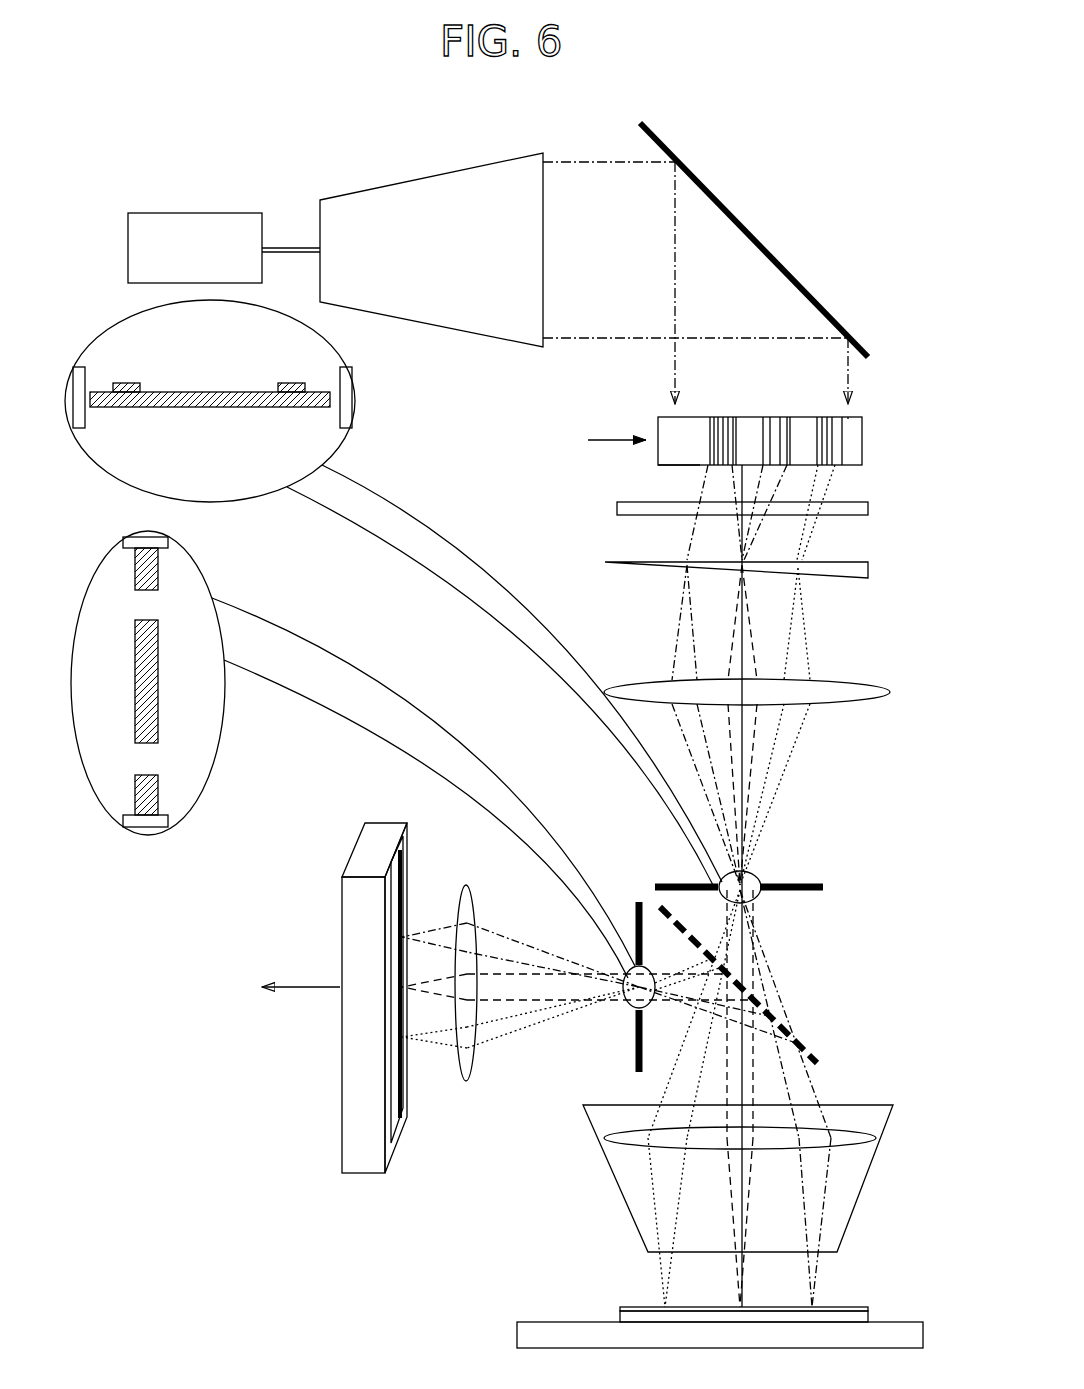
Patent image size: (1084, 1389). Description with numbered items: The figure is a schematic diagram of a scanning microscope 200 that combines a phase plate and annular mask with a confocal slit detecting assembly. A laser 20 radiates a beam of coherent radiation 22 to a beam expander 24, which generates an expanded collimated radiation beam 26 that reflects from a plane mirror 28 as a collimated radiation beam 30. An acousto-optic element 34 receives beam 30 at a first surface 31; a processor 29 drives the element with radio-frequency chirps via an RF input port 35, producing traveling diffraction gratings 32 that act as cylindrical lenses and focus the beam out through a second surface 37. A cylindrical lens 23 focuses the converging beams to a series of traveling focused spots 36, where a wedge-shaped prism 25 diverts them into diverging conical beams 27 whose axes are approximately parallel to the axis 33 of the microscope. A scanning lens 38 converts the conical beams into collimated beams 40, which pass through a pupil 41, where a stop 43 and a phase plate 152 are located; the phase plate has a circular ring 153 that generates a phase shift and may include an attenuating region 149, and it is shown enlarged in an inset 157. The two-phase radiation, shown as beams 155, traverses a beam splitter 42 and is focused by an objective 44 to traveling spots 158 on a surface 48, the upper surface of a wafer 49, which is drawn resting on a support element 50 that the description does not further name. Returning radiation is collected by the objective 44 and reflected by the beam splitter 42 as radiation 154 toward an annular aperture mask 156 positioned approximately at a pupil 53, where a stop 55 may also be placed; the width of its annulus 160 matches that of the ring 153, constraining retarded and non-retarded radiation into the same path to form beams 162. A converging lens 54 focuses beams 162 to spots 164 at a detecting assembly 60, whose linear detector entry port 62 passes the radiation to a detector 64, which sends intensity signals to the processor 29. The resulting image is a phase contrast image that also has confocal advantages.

The laser 20 is at (205, 213).
The beam of coherent radiation 22 is at (293, 248).
The beam expander 24 is at (405, 182).
The expanded collimated radiation beam 26 is at (586, 162).
The plane mirror 28 is at (775, 262).
The collimated radiation beam 30 is at (675, 355).
The first surface 31 is at (707, 417).
The traveling diffraction gratings 32 is at (820, 417).
The acousto-optic element 34 is at (864, 432).
The RF input port 35 is at (657, 440).
The second surface 37 is at (668, 465).
The cylindrical lens 23 is at (617, 508).
The traveling focused spots 36 is at (815, 548).
The wedge-shaped prism 25 is at (868, 575).
The axis 33 is at (742, 612).
The diverging conical beams 27 is at (825, 640).
The scanning lens 38 is at (628, 686).
The collimated beams 40 is at (825, 768).
The pupil 41 is at (803, 832).
The stop 43 is at (818, 887).
The stop 55 is at (639, 902).
The beams 155 is at (800, 980).
The beam splitter 42 is at (793, 1038).
The objective 44 is at (610, 1170).
The converging lens 54 is at (468, 890).
The detector entry port 62 is at (403, 900).
The detecting assembly 60 is at (388, 823).
The detector 64 is at (335, 838).
The beams 162 is at (577, 930).
The pupil 53 is at (600, 1030).
The radiation 154 is at (640, 1055).
The spots 164 is at (430, 1105).
The traveling spots 158 is at (835, 1265).
The surface 48 is at (630, 1307).
The wafer 49 is at (862, 1307).
The stage 50 is at (548, 1322).
The attenuating region 149 is at (168, 432).
The phase plate 152 is at (215, 408).
The circular ring 153 is at (288, 383).
The inset 157 is at (262, 504).
The scanning microscope 200 is at (240, 825).
The annulus 160 is at (143, 605).
The annular aperture mask 156 is at (158, 710).
The processor 29 is at (204, 976).